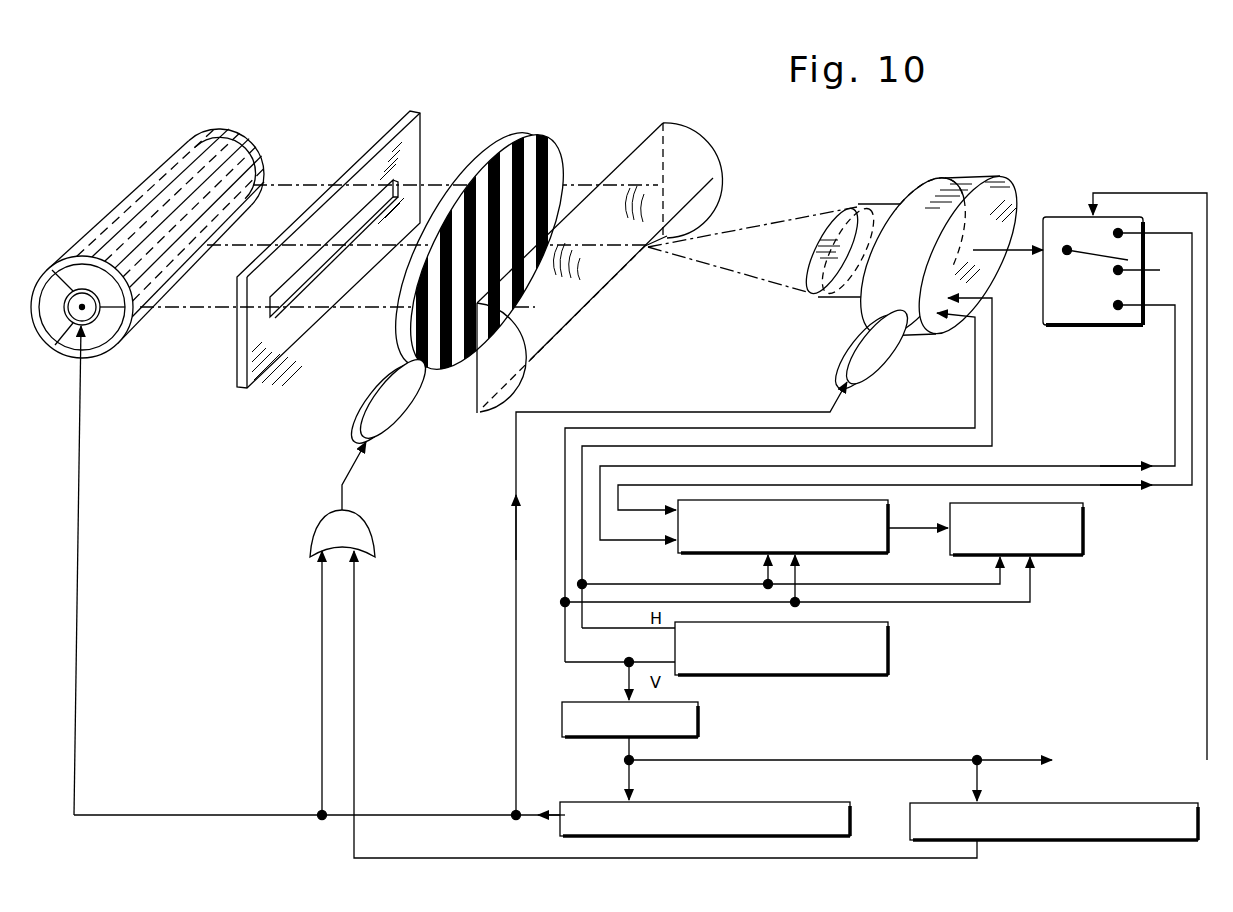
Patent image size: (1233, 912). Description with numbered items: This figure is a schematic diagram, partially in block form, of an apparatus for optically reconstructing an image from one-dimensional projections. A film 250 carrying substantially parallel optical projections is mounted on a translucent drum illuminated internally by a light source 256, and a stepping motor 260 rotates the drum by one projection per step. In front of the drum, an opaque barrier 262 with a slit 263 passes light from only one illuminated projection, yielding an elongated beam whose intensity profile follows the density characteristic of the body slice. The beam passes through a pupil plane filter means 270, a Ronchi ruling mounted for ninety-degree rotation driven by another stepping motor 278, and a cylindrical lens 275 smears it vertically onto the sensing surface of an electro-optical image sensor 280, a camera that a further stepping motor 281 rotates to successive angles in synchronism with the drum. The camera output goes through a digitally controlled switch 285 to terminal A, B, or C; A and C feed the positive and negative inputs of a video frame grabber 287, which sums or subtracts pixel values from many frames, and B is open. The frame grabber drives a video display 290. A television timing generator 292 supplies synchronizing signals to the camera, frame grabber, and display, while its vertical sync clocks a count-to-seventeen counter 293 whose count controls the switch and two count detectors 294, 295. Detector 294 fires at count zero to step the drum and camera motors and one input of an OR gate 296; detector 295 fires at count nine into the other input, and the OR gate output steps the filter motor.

The film 250 is at (118, 212).
The light source 256 is at (237, 134).
The stepping motor 260 is at (73, 284).
The opaque barrier 262 is at (415, 137).
The slit 263 is at (353, 220).
The pupil plane filter means 270 is at (533, 132).
The cylindrical lens 275 is at (685, 142).
The stepping motor 278 is at (368, 405).
The electro-optical image sensor 280 is at (966, 178).
The stepping motor 281 is at (857, 334).
The digitally controlled switch 285 is at (1060, 217).
The video frame grabber 287 is at (890, 543).
The video display 290 is at (1085, 550).
The television timing generator 292 is at (890, 650).
The count-to-seventeen counter 293 is at (700, 718).
The count detector 294 is at (780, 801).
The count detector 295 is at (1075, 804).
The OR gate 296 is at (372, 522).